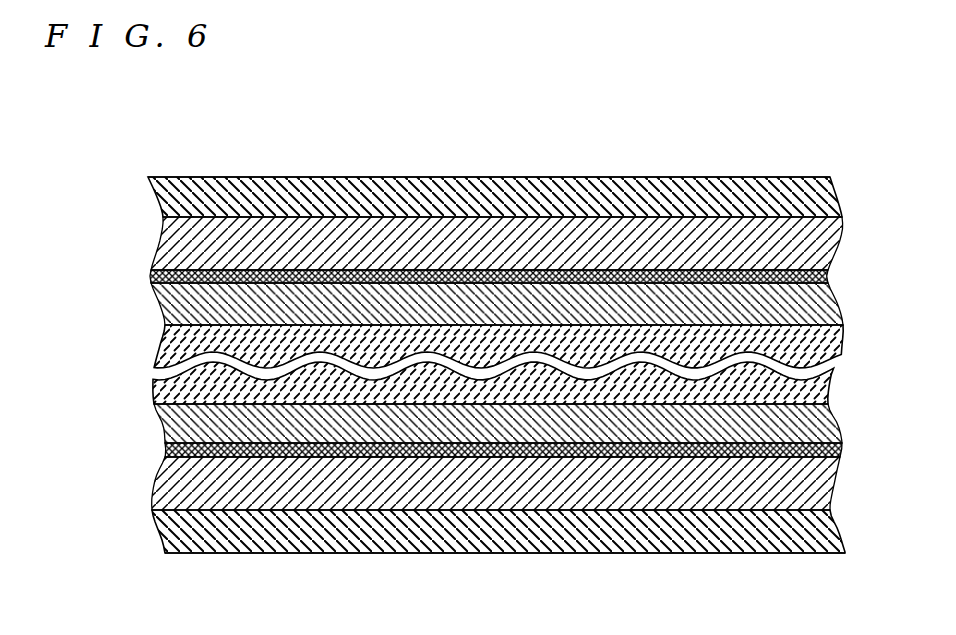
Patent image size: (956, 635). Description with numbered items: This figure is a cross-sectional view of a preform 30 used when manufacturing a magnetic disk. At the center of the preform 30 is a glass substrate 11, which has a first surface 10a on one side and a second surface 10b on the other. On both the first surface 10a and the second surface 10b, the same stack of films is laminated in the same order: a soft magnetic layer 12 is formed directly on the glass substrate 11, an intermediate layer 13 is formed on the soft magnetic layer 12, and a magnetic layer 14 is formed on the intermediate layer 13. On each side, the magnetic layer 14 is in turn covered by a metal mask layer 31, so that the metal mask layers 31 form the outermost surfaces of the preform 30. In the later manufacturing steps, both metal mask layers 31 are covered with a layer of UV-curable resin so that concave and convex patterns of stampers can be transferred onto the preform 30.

The preform 30 is at (519, 120).
The metal mask layer 31 is at (824, 196).
The magnetic layer 14 is at (828, 243).
The intermediate layer 13 is at (824, 276).
The soft magnetic layer 12 is at (826, 304).
The glass substrate 11 is at (830, 338).
The first surface 10a is at (216, 163).
The second surface 10b is at (217, 569).